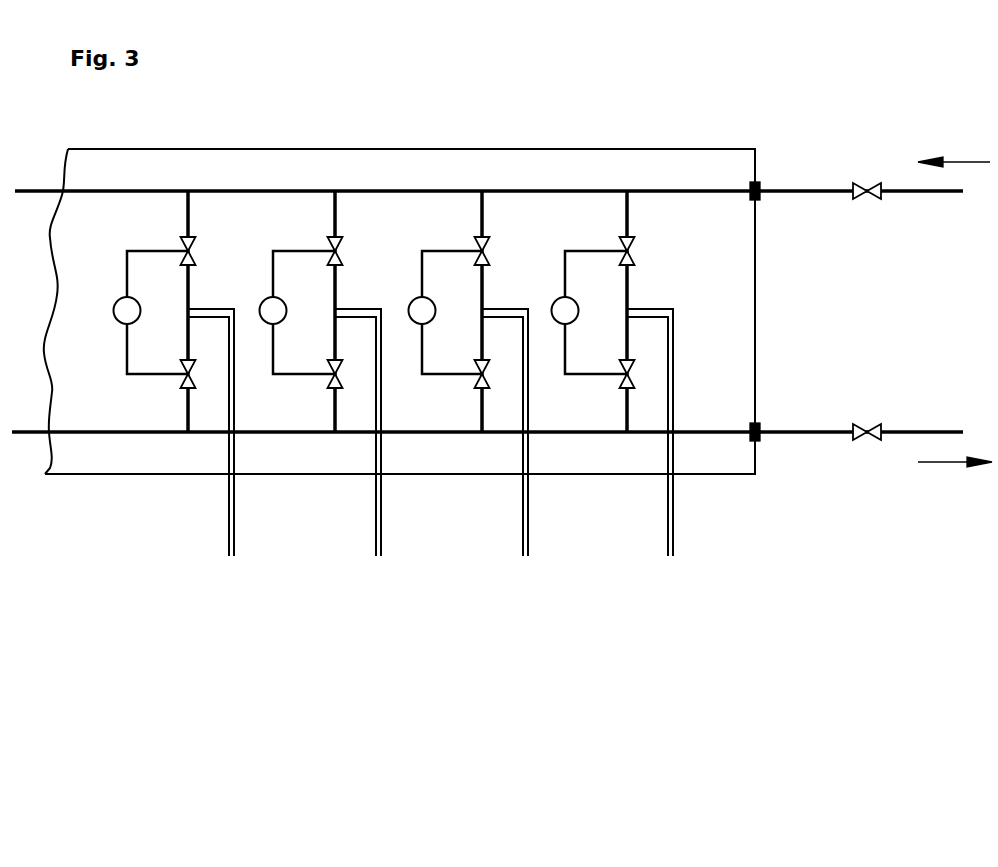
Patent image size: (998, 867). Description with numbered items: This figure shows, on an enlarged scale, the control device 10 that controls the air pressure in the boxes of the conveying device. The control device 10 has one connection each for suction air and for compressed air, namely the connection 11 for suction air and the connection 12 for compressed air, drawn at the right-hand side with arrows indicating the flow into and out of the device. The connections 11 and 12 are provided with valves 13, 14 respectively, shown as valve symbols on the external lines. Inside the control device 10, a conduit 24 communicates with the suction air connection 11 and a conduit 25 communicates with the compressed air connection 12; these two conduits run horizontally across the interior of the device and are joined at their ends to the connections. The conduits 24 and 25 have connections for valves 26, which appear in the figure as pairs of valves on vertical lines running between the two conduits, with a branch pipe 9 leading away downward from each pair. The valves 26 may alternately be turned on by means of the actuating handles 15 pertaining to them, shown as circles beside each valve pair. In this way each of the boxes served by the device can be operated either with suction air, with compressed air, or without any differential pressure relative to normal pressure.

The branch pipe to consumer 9 is at (236, 510).
The control device 10 is at (535, 148).
The connection for suction air 11 is at (797, 188).
The connection for compressed air 12 is at (812, 436).
The valve 13 is at (864, 184).
The valve 14 is at (874, 441).
The actuating handle 15 is at (278, 313).
The conduit 24 is at (672, 190).
The conduit 25 is at (607, 436).
The valve 26 is at (194, 254).